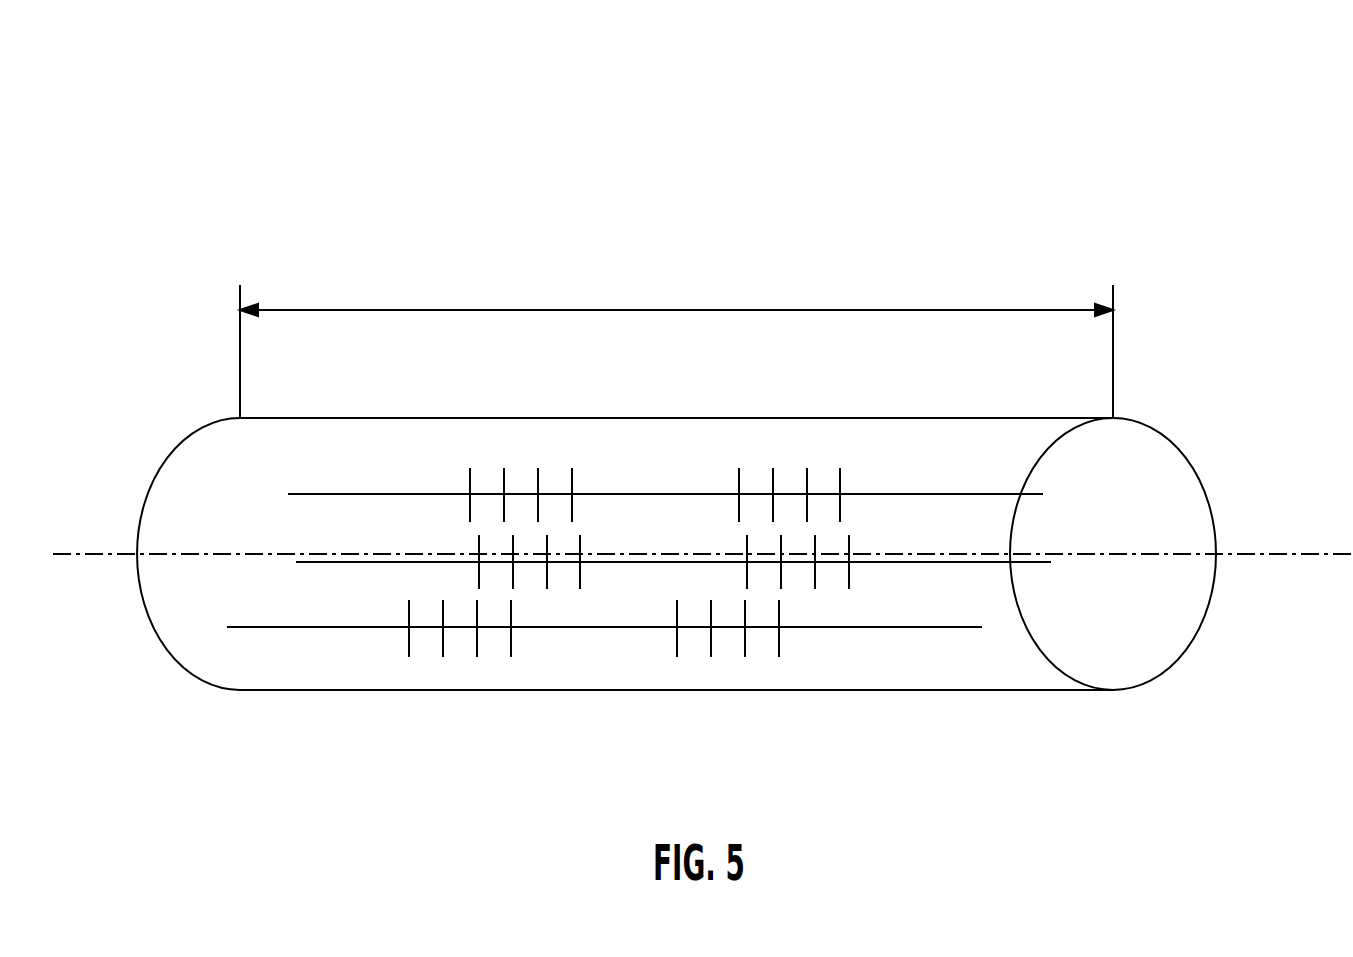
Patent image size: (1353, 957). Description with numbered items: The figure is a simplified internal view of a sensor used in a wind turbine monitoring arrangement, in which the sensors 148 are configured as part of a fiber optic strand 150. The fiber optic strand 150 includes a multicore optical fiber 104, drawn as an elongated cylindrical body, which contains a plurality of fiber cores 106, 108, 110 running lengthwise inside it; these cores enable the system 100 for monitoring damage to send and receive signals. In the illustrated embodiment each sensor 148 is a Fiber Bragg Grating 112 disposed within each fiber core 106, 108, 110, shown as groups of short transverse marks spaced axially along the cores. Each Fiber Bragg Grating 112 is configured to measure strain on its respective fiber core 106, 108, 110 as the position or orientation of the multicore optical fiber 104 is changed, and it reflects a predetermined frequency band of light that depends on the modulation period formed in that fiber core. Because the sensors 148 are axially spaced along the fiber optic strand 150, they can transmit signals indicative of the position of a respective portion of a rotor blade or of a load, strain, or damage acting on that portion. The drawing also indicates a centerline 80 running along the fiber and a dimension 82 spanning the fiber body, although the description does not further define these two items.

The central axis 80 is at (1297, 553).
The length 82 is at (430, 310).
The system for monitoring damage 100 is at (1013, 160).
The multicore optical fiber 104 is at (568, 690).
The fiber core 106 is at (325, 494).
The fiber core 108 is at (365, 562).
The fiber core 110 is at (331, 627).
The Fiber Bragg Grating 112 is at (580, 440).
The sensor 148 is at (405, 728).
The fiber optic strand 150 is at (752, 218).